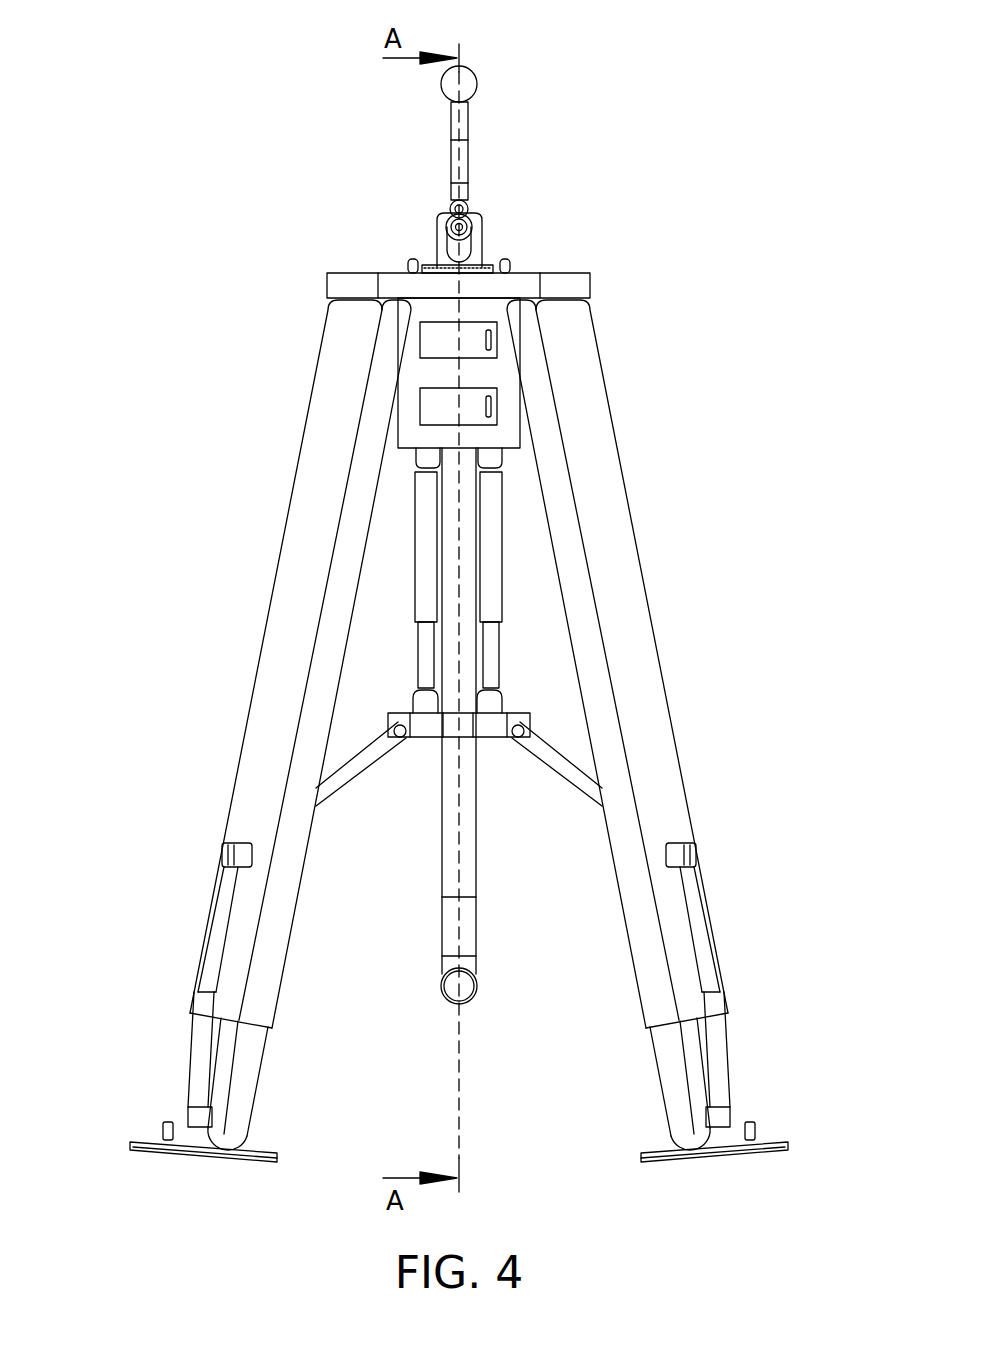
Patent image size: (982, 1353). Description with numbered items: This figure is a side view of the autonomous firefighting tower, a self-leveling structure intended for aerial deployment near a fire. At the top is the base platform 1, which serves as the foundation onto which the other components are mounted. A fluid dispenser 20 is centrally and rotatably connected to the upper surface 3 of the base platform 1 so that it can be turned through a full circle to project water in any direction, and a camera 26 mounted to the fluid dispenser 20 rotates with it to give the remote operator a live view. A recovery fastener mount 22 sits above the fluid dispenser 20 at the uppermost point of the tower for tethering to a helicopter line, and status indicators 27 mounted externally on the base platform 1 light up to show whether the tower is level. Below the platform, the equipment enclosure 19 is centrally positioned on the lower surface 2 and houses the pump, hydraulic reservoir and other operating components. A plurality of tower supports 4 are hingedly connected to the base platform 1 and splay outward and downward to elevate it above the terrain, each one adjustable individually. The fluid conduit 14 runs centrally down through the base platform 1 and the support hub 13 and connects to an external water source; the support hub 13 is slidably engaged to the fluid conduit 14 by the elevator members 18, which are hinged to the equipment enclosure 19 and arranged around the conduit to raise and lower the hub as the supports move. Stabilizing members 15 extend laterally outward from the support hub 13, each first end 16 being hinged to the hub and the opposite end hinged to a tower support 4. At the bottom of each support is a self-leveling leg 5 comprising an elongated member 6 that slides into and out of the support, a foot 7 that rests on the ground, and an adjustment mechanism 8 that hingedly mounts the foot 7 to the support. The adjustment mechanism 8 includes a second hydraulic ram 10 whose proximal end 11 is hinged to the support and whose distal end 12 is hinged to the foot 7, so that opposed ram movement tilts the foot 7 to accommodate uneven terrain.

The base platform 1 is at (606, 290).
The lower surface 2 is at (448, 303).
The upper surface 3 is at (367, 270).
The tower supports 4 is at (318, 405).
The self-leveling legs 5 is at (110, 940).
The elongated member 6 is at (247, 1082).
The foot 7 is at (130, 1146).
The adjustment mechanism 8 is at (296, 1030).
The second hydraulic ram 10 is at (208, 965).
The proximal end 11 is at (230, 868).
The distal end 12 is at (183, 1112).
The support hub 13 is at (530, 718).
The fluid conduit 14 is at (470, 985).
The stabilizing members 15 is at (334, 783).
The first end 16 is at (401, 737).
The elevator members 18 is at (424, 636).
The equipment enclosure 19 is at (512, 440).
The fluid dispenser 20 is at (478, 242).
The recovery fastener mount 22 is at (466, 80).
The camera 26 is at (464, 210).
The status indicator 27 is at (410, 258).